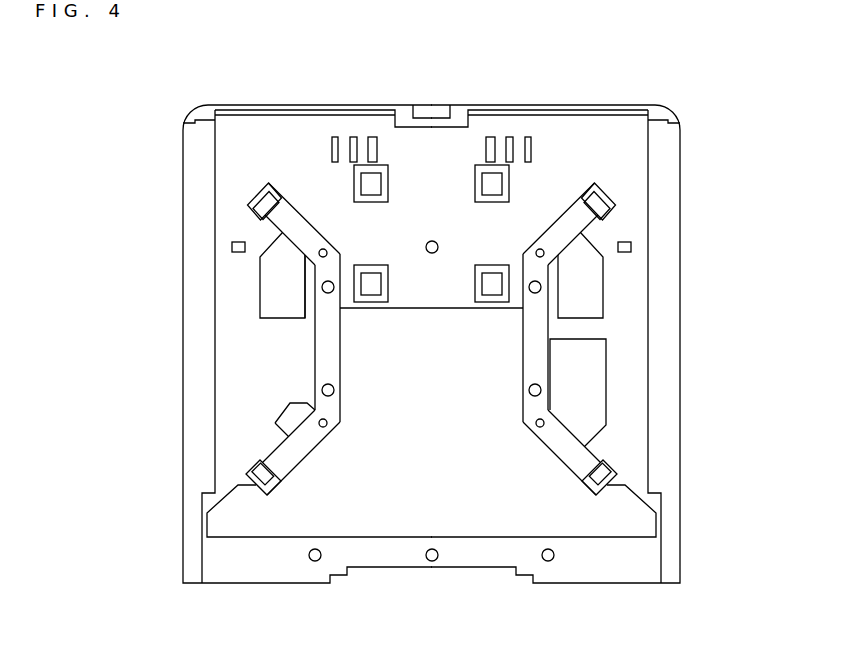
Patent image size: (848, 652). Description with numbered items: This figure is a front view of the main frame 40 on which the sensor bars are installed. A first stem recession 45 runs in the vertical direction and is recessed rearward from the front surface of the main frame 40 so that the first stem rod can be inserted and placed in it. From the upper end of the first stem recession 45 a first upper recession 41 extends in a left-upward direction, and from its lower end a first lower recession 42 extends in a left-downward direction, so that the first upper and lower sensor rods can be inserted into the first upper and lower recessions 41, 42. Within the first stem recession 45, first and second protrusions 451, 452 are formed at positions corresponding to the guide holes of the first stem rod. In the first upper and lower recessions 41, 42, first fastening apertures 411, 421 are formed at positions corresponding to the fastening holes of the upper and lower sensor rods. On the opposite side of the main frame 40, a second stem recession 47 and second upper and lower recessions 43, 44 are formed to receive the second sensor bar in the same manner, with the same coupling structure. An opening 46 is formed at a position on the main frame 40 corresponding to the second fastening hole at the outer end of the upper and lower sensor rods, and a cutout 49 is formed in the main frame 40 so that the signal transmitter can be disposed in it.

The main frame 40 is at (110, 69).
The first upper recession 41 is at (287, 215).
The first fastening aperture 411 is at (319, 257).
The first lower recession 42 is at (296, 462).
The first fastening aperture 421 is at (325, 428).
The second upper recession 43 is at (578, 226).
The second lower recession 44 is at (578, 463).
The first stem recession 45 is at (325, 347).
The first protrusion 451 is at (305, 320).
The second protrusion 452 is at (275, 423).
The opening 46 is at (250, 207).
The second stem recession 47 is at (542, 348).
The cutout 49 is at (285, 290).